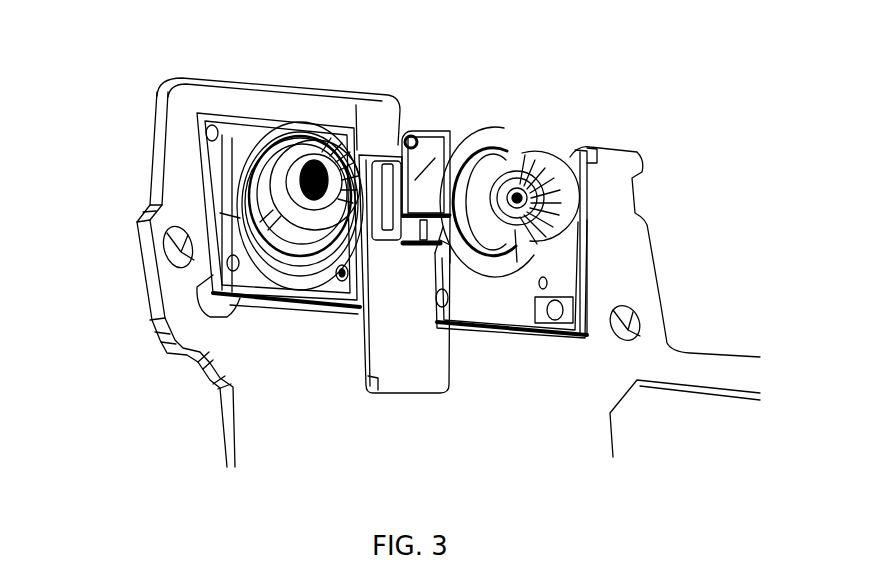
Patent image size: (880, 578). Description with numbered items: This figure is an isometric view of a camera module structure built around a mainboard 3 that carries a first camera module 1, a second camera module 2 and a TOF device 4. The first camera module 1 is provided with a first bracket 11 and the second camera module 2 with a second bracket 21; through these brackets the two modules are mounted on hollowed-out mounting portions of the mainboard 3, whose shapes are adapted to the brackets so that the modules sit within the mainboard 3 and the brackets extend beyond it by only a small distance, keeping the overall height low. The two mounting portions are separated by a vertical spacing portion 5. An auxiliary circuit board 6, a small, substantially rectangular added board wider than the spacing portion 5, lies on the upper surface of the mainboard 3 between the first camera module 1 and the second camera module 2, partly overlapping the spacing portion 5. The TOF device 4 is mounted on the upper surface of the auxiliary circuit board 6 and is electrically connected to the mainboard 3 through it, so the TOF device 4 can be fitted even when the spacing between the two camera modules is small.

The first camera module 1 is at (273, 160).
The second camera module 2 is at (535, 148).
The mainboard 3 is at (264, 103).
The TOF device 4 is at (427, 128).
The spacing portion 5 is at (370, 128).
The auxiliary circuit board 6 is at (415, 373).
The first bracket 11 is at (220, 184).
The second bracket 21 is at (485, 136).